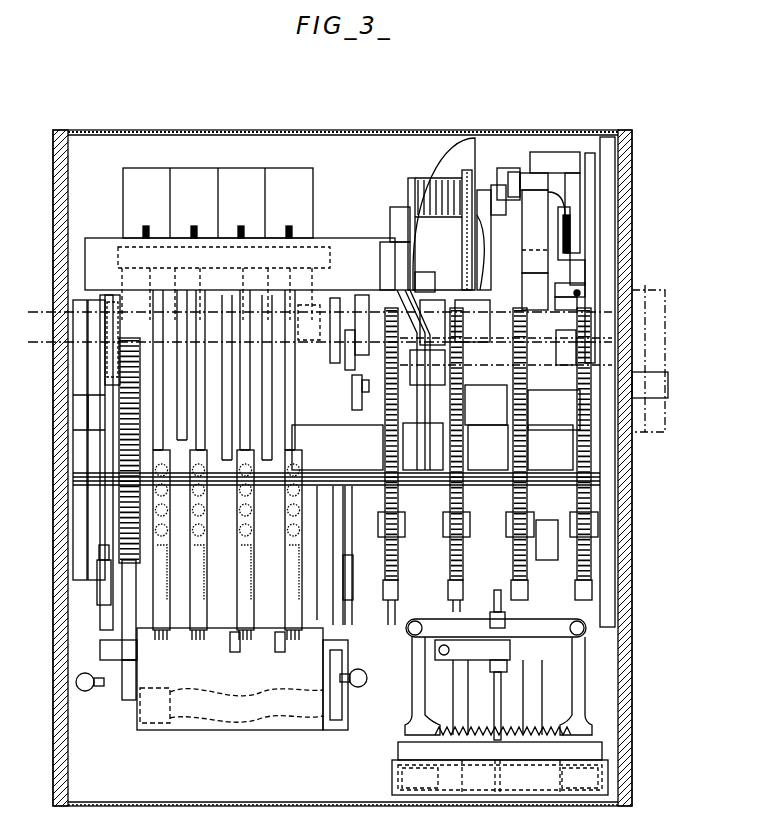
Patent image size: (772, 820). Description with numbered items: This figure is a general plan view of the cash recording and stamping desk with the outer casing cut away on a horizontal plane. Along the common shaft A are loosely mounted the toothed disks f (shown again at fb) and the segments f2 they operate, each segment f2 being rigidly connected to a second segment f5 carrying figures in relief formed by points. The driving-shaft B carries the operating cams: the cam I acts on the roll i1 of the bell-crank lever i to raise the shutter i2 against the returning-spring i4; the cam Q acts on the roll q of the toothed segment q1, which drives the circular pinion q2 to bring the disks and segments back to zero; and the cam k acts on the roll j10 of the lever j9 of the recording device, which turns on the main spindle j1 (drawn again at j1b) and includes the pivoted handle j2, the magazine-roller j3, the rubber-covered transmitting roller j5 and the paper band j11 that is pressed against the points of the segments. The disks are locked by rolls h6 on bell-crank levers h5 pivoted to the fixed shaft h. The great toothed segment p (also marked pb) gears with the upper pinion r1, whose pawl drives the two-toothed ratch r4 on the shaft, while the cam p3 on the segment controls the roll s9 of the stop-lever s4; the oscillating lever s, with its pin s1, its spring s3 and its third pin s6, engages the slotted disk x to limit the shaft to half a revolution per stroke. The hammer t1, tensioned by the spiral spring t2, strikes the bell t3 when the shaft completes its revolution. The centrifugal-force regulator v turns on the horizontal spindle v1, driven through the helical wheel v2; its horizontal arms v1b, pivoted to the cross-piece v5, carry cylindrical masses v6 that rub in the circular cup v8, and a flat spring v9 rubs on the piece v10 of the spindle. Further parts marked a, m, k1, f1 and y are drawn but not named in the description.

The segment f2 is at (289, 168).
The shutter i2 is at (240, 279).
The cam Q is at (320, 319).
The frame casing a is at (637, 275).
The roll q is at (655, 312).
The bracket m is at (650, 385).
The returning-spring i4 is at (112, 346).
The circular pinion q2 is at (138, 420).
The main spindle j1 is at (100, 585).
The toothed segment q1 is at (128, 560).
The toothed disk f is at (230, 350).
The recording segment f5 is at (176, 490).
The driving-shaft B is at (309, 322).
The cam k is at (339, 330).
The lever arm k1 is at (360, 332).
The roll j10 is at (358, 395).
The lever j9 is at (337, 447).
The magazine-roller j3 is at (366, 490).
The main spindle j1b is at (352, 560).
The paper band j11 is at (211, 679).
The transmitting roller j5 is at (128, 705).
The pivoted handle j2 is at (205, 718).
The common shaft A is at (488, 444).
The fixed shaft h is at (550, 447).
The gear block f1 is at (486, 405).
The toothed disk fb is at (554, 410).
The bell-crank lever i is at (421, 380).
The cam I is at (432, 322).
The two-toothed ratch r4 is at (476, 321).
The spiral spring t2 is at (432, 178).
The bell t3 is at (438, 235).
The hammer t1 is at (491, 237).
The roll i1 is at (436, 272).
The toothed segment p is at (528, 222).
The cam p3 is at (518, 186).
The upper pinion r1 is at (525, 308).
The roll s9 is at (545, 165).
The oscillating lever s is at (575, 168).
The pin s1 is at (570, 280).
The spring s3 is at (570, 240).
The third pin s6 is at (575, 262).
The stop-lever s4 is at (570, 272).
The detent y is at (572, 310).
The disk x is at (566, 347).
The roll h6 is at (405, 525).
The bell-crank lever h5 is at (446, 545).
The toothed segment pb is at (543, 543).
The horizontal spindle v1 is at (502, 600).
The cross-piece v5 is at (496, 628).
The flat spring v9 is at (472, 650).
The piece of spindle v10 is at (508, 663).
The centrifugal-force regulator v is at (498, 686).
The horizontal arm v1b is at (478, 730).
The helical wheel v2 is at (500, 741).
The circular cup v8 is at (500, 777).
The cylindrical mass v6 is at (500, 778).